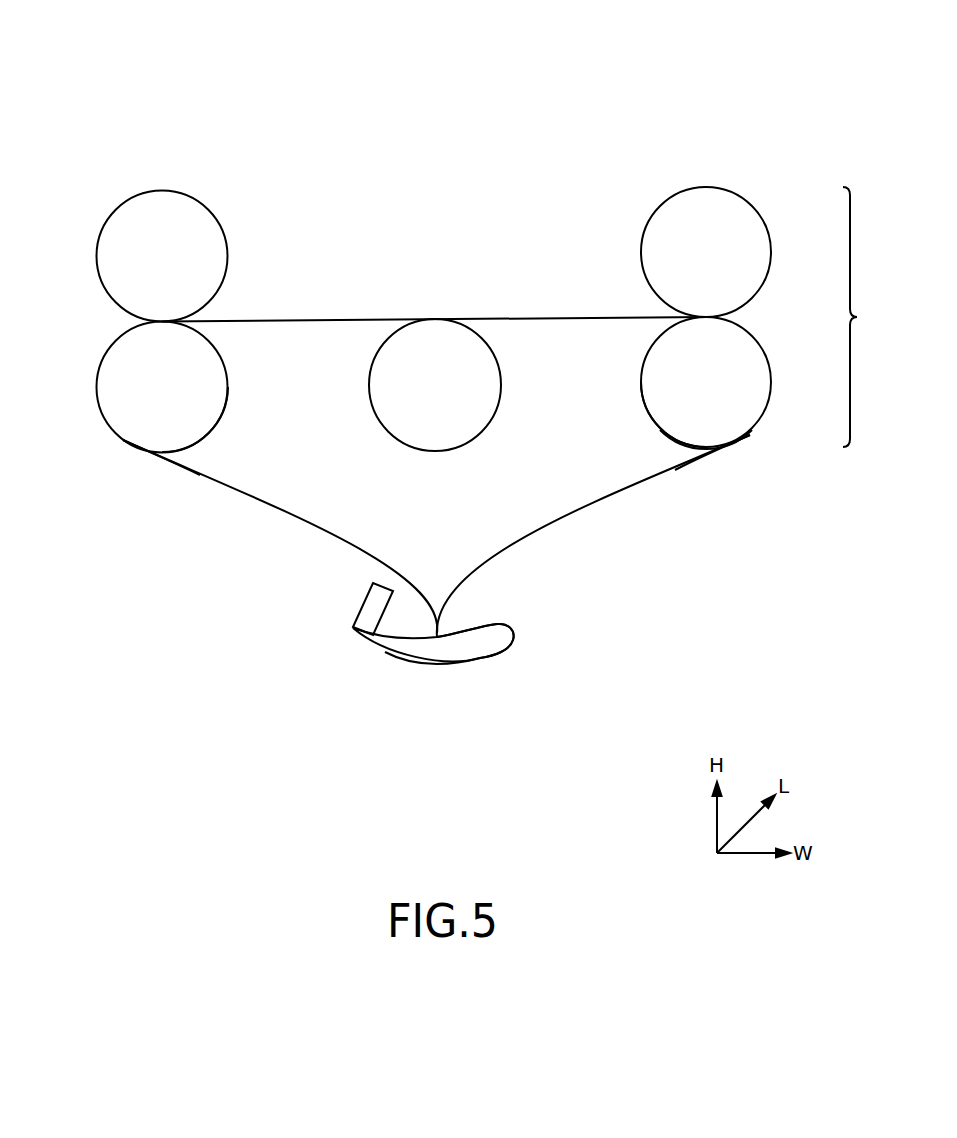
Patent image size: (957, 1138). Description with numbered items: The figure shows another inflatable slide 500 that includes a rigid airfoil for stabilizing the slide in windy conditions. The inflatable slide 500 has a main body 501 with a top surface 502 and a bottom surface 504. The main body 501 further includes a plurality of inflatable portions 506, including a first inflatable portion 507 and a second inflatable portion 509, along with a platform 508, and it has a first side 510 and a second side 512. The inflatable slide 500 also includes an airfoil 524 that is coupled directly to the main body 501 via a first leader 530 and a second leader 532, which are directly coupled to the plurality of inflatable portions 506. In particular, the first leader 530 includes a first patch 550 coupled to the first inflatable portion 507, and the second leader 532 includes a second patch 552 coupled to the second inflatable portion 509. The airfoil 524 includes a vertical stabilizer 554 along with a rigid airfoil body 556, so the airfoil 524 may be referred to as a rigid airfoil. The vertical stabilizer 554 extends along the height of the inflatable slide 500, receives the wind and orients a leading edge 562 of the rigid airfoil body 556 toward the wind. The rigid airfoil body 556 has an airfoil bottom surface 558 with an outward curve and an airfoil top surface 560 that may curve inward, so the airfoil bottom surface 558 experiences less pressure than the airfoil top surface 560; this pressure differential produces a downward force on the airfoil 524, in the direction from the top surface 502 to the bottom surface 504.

The inflatable slide 500 is at (160, 56).
The main body 501 is at (870, 317).
The top surface 502 is at (158, 191).
The bottom surface 504 is at (688, 447).
The plurality of inflatable portions 506 is at (743, 170).
The first inflatable portion 507 is at (230, 395).
The platform 508 is at (272, 320).
The second inflatable portion 509 is at (642, 402).
The first side 510 is at (97, 383).
The second side 512 is at (773, 382).
The airfoil 524 is at (522, 666).
The first leader 530 is at (187, 477).
The second leader 532 is at (597, 503).
The first patch 550 is at (125, 440).
The second patch 552 is at (747, 437).
The vertical stabilizer 554 is at (332, 663).
The rigid airfoil body 556 is at (447, 663).
The airfoil bottom surface 558 is at (432, 663).
The airfoil top surface 560 is at (478, 630).
The leading edge 562 is at (513, 628).